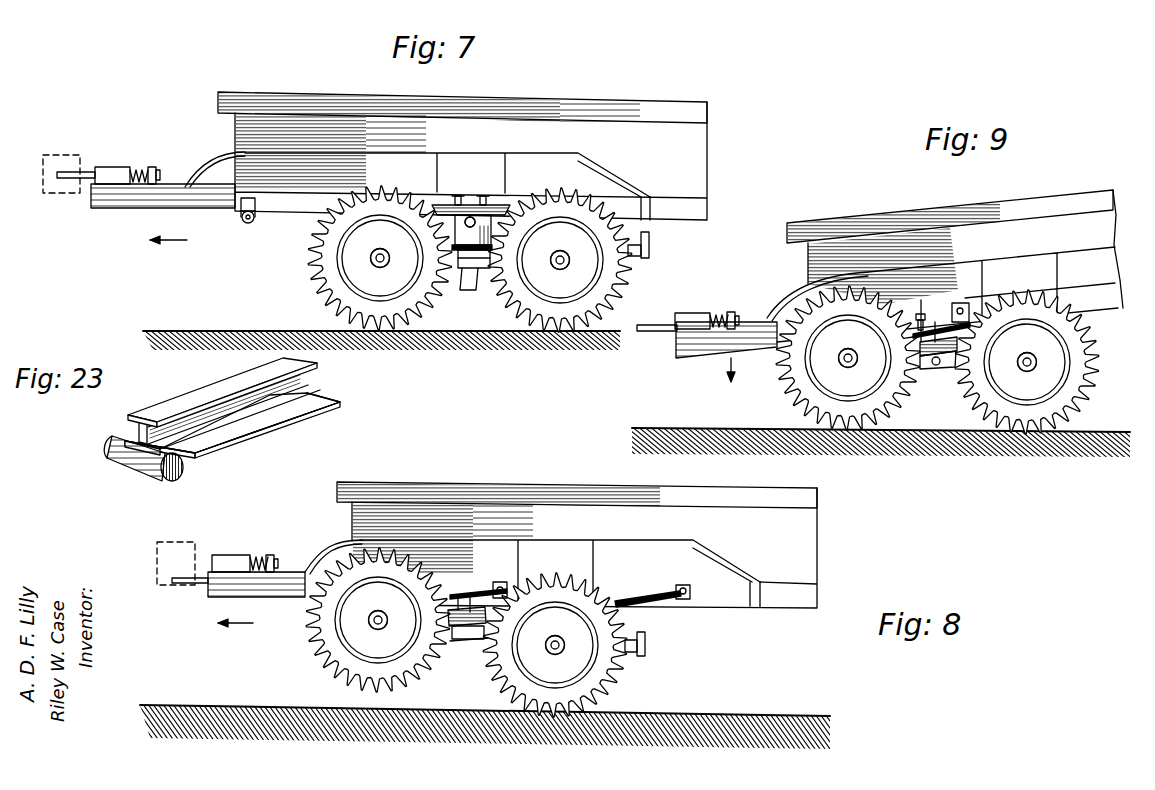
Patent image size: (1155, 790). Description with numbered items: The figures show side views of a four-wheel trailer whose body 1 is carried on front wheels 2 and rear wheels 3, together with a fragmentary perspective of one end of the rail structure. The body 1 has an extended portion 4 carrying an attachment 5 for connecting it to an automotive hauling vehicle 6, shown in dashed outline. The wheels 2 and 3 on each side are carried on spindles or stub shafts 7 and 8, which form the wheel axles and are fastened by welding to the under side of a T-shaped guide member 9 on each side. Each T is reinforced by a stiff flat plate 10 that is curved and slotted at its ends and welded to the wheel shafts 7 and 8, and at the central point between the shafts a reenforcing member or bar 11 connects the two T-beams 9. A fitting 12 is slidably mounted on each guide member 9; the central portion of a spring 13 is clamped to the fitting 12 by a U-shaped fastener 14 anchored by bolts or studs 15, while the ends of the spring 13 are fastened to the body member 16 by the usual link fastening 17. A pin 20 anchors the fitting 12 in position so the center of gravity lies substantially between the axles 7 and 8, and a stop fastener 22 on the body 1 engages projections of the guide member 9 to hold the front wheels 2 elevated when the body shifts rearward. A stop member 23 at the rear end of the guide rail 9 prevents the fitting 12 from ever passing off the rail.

In FIG. 7, the body 1 is at (702, 148).
In FIG. 9, the body 1 is at (800, 252).
In FIG. 8, the body 1 is at (347, 520).
In FIG. 7, the front wheels 2 is at (318, 277).
In FIG. 9, the front wheels 2 is at (790, 398).
In FIG. 8, the front wheels 2 is at (324, 655).
In FIG. 7, the rear wheels 3 is at (604, 283).
In FIG. 9, the rear wheels 3 is at (985, 398).
In FIG. 8, the rear wheels 3 is at (493, 677).
In FIG. 7, the extended portion 4 is at (150, 216).
In FIG. 9, the extended portion 4 is at (717, 352).
In FIG. 8, the extended portion 4 is at (228, 590).
In FIG. 7, the attachment 5 is at (128, 162).
In FIG. 9, the attachment 5 is at (702, 313).
In FIG. 8, the attachment 5 is at (238, 555).
In FIG. 7, the automotive hauling vehicle 6 is at (84, 158).
In FIG. 8, the automotive hauling vehicle 6 is at (192, 542).
In FIG. 7, the spindle or stub shaft 7 is at (378, 258).
In FIG. 9, the spindle or stub shaft 7 is at (848, 358).
In FIG. 8, the spindle or stub shaft 7 is at (378, 620).
In FIG. 23, the spindle or stub shaft 7 is at (160, 478).
In FIG. 7, the spindle or stub shaft 8 is at (572, 261).
In FIG. 9, the spindle or stub shaft 8 is at (1030, 364).
In FIG. 8, the spindle or stub shaft 8 is at (565, 645).
In FIG. 7, the guide member 9 is at (642, 236).
In FIG. 9, the guide member 9 is at (940, 330).
In FIG. 8, the guide member 9 is at (644, 653).
In FIG. 23, the guide member 9 is at (217, 388).
In FIG. 7, the flat plate 10 is at (461, 276).
In FIG. 9, the flat plate 10 is at (927, 362).
In FIG. 8, the flat plate 10 is at (468, 650).
In FIG. 23, the flat plate 10 is at (252, 428).
In FIG. 7, the reenforcing member or bar 11 is at (479, 270).
In FIG. 9, the reenforcing member or bar 11 is at (948, 370).
In FIG. 8, the reenforcing member or bar 11 is at (464, 641).
In FIG. 7, the fitting 12 is at (478, 220).
In FIG. 7, the spring 13 is at (490, 204).
In FIG. 9, the spring 13 is at (935, 322).
In FIG. 8, the spring 13 is at (640, 604).
In FIG. 7, the U-shaped fastener 14 is at (472, 204).
In FIG. 7, the bolt or stud 15 is at (466, 224).
In FIG. 7, the body member 16 is at (690, 213).
In FIG. 9, the body member 16 is at (1097, 298).
In FIG. 8, the body member 16 is at (719, 604).
In FIG. 9, the link fastening 17 is at (970, 314).
In FIG. 8, the link fastening 17 is at (510, 588).
In FIG. 7, the pin 20 is at (446, 206).
In FIG. 9, the pin 20 is at (922, 300).
In FIG. 8, the pin 20 is at (458, 596).
In FIG. 7, the stop fastener 22 is at (246, 224).
In FIG. 7, the stop member 23 is at (648, 251).
In FIG. 8, the stop member 23 is at (648, 647).